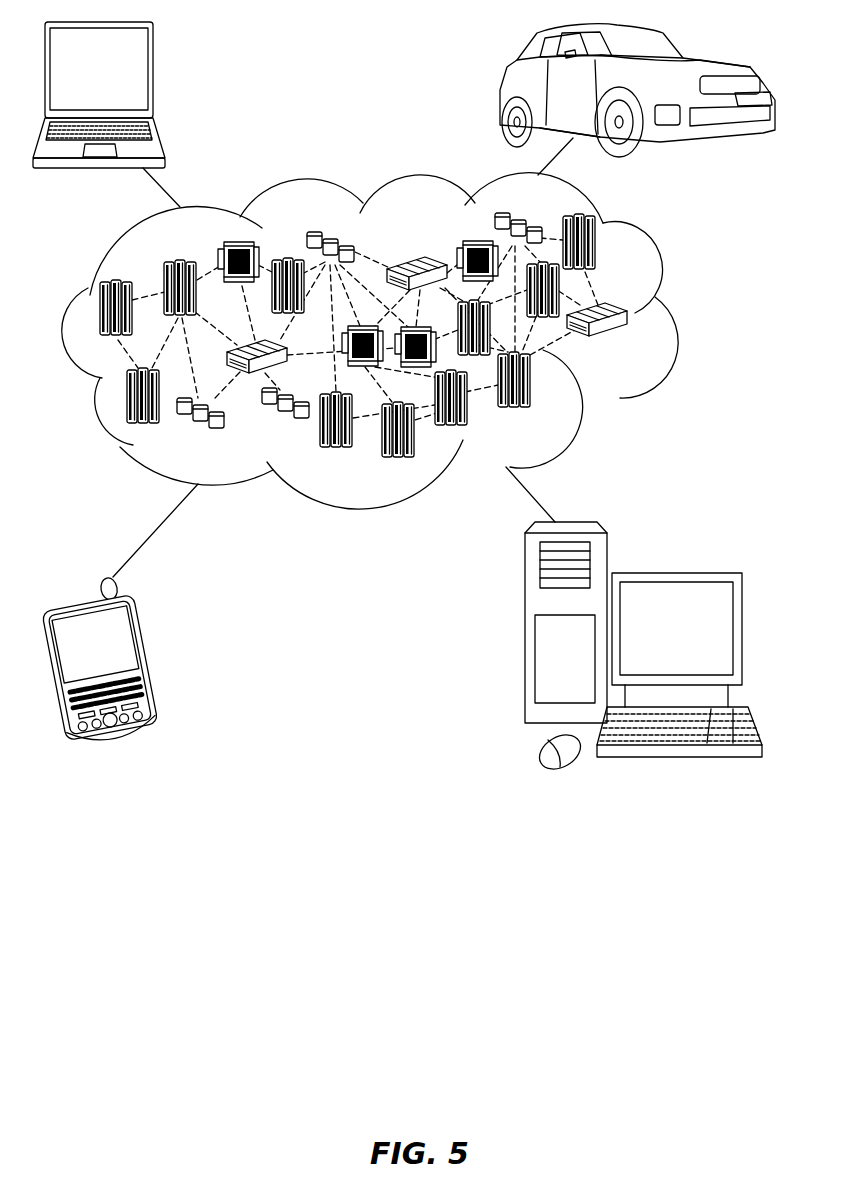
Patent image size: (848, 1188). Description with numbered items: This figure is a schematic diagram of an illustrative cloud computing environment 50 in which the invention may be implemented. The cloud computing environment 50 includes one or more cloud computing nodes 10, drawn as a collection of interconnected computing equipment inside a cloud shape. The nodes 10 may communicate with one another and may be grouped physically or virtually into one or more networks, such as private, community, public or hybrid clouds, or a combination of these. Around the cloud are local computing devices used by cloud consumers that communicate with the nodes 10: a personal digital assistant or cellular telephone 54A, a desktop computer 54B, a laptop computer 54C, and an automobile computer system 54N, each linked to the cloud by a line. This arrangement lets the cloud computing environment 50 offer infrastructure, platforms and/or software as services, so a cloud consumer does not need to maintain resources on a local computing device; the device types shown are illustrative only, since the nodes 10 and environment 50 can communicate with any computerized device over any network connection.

The cloud computing environment 50 is at (675, 317).
The cloud computing node 10 is at (632, 349).
The personal digital assistant or cellular telephone 54A is at (147, 653).
The desktop computer 54B is at (673, 573).
The laptop computer 54C is at (155, 78).
The automobile computer system 54N is at (500, 88).